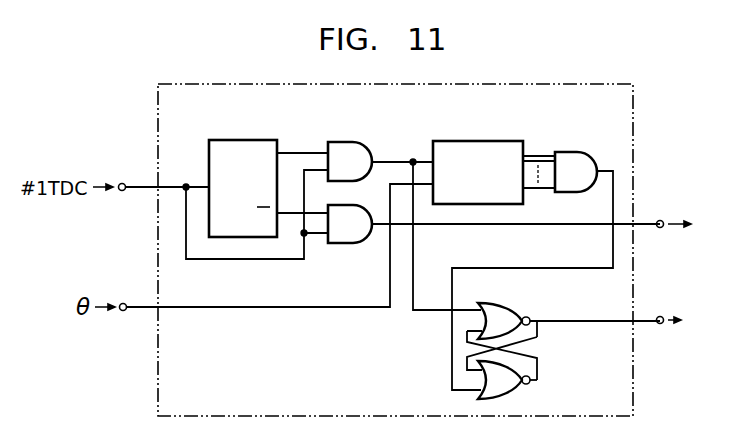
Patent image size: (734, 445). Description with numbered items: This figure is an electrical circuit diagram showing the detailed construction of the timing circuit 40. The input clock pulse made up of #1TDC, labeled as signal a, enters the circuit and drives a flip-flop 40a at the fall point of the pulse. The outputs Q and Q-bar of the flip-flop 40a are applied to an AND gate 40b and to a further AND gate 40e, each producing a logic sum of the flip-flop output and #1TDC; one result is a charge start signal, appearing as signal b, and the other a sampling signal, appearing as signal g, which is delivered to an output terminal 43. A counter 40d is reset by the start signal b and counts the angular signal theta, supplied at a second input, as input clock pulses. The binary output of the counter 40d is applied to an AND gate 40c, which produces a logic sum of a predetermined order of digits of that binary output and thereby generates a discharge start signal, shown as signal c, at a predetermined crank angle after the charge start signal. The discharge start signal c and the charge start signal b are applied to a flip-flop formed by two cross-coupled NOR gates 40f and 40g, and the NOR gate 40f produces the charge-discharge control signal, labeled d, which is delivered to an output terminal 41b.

The timing circuit 40 is at (633, 116).
The flip-flop 40a is at (222, 141).
The AND gate 40b is at (352, 142).
The AND gate 40c is at (572, 151).
The counter 40d is at (478, 141).
The AND gate 40e is at (343, 244).
The NOR gate 40f is at (499, 308).
The NOR gate 40g is at (505, 399).
The output terminal 41b is at (693, 323).
The output terminal 43 is at (692, 227).
The signal a is at (183, 186).
The signal b is at (385, 162).
The signal c is at (497, 268).
The signal d is at (568, 320).
The signal g is at (460, 225).